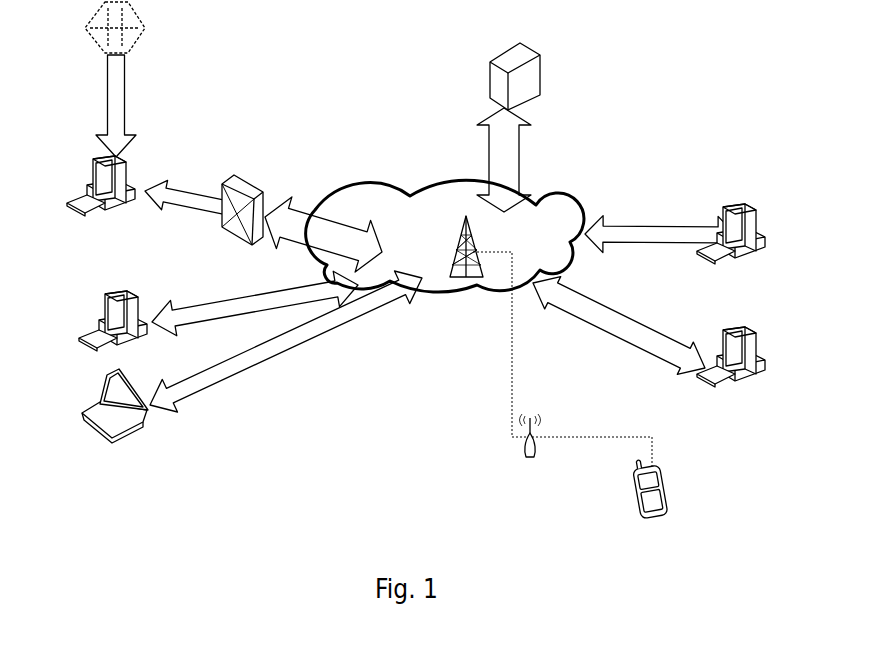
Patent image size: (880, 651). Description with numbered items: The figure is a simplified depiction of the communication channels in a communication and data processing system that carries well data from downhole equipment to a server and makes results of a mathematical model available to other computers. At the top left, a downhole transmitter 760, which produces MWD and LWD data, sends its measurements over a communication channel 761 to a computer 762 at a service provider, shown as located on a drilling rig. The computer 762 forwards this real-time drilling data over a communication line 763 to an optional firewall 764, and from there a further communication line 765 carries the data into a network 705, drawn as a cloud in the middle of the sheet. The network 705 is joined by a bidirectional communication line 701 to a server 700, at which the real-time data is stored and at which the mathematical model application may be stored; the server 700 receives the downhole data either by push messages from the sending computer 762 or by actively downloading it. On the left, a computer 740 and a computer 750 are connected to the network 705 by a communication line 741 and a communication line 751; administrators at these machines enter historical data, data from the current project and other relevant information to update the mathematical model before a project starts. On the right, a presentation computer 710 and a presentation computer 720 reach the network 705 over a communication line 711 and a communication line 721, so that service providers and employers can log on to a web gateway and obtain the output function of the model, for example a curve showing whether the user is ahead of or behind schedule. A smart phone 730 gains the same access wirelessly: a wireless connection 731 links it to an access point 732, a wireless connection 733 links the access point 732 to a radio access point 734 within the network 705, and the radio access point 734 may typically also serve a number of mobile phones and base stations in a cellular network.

The server 700 is at (497, 73).
The bidirectional communication line 701 is at (510, 155).
The network 705 is at (445, 236).
The presentation computer 710 is at (751, 225).
The communication line 711 is at (648, 228).
The presentation computer 720 is at (752, 342).
The communication line 721 is at (635, 322).
The smart phone 730 is at (668, 488).
The wireless connection 731 is at (589, 435).
The access point 732 is at (530, 460).
The wireless connection 733 is at (509, 370).
The radio access point 734 is at (462, 283).
The computer 740 is at (136, 430).
The communication line 741 is at (280, 348).
The computer 750 is at (105, 313).
The communication line 751 is at (260, 298).
The downhole transmitter 760 is at (128, 24).
The communication channel 761 is at (125, 90).
The computer 762 is at (95, 178).
The communication line 763 is at (193, 193).
The firewall 764 is at (250, 183).
The communication line 765 is at (327, 227).